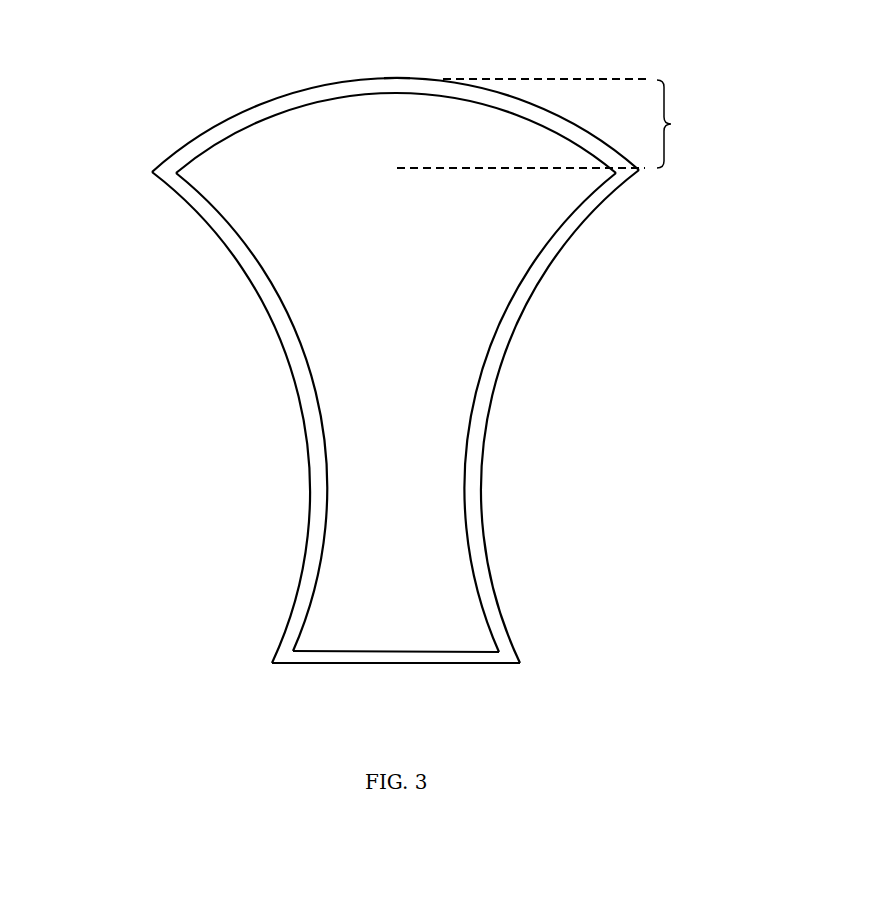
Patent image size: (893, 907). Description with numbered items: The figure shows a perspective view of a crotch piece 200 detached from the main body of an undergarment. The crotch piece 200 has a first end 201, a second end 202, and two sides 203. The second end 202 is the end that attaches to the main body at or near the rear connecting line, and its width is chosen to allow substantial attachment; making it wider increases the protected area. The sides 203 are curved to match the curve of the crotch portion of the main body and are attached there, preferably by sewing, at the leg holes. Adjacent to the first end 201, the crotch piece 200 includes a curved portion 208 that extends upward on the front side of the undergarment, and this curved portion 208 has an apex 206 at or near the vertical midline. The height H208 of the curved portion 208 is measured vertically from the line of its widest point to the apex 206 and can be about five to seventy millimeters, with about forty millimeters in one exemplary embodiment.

The crotch piece 200 is at (152, 94).
The first end 201 is at (323, 86).
The second end 202 is at (379, 663).
The sides 203 is at (302, 396).
The apex 206 is at (397, 77).
The curved portion 208 is at (443, 132).
The height of the curved portion H208 is at (696, 124).